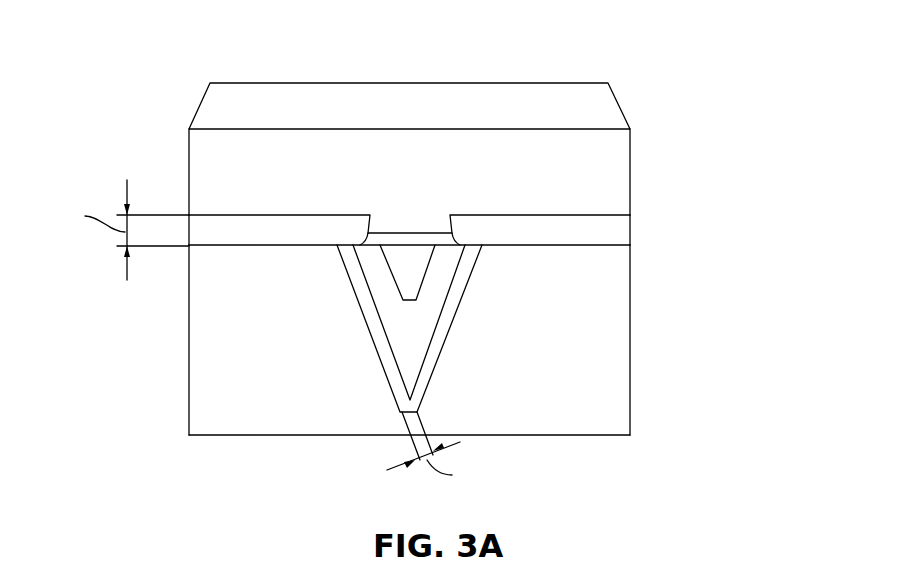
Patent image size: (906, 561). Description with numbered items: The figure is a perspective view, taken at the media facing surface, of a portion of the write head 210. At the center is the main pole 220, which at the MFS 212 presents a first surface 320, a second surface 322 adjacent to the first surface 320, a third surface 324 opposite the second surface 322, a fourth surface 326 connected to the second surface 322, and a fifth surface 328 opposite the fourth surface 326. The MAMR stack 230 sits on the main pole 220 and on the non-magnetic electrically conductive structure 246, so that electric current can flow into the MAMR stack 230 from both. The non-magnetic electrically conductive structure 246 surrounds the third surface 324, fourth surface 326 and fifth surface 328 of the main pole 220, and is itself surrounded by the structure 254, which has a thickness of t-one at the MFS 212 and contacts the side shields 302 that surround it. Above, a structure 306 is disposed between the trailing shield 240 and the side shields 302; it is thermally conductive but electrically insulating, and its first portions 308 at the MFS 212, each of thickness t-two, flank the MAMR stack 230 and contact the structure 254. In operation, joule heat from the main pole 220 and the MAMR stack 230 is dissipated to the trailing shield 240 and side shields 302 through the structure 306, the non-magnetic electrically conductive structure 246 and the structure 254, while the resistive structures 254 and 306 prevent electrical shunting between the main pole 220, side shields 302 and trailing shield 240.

The write head 210 is at (152, 61).
The MFS 212 is at (587, 420).
The main pole 220 is at (420, 260).
The MAMR stack 230 is at (422, 223).
The trailing shield 240 is at (610, 163).
The non-magnetic electrically conductive structure 246 is at (413, 332).
The structure 254 is at (425, 373).
The side shields 302 is at (282, 391).
The structure 306 is at (642, 249).
The first portions 308 is at (612, 222).
The first surface 320 is at (408, 276).
The second surface 322 is at (396, 245).
The third surface 324 is at (403, 320).
The fourth surface 326 is at (383, 258).
The fifth surface 328 is at (424, 281).